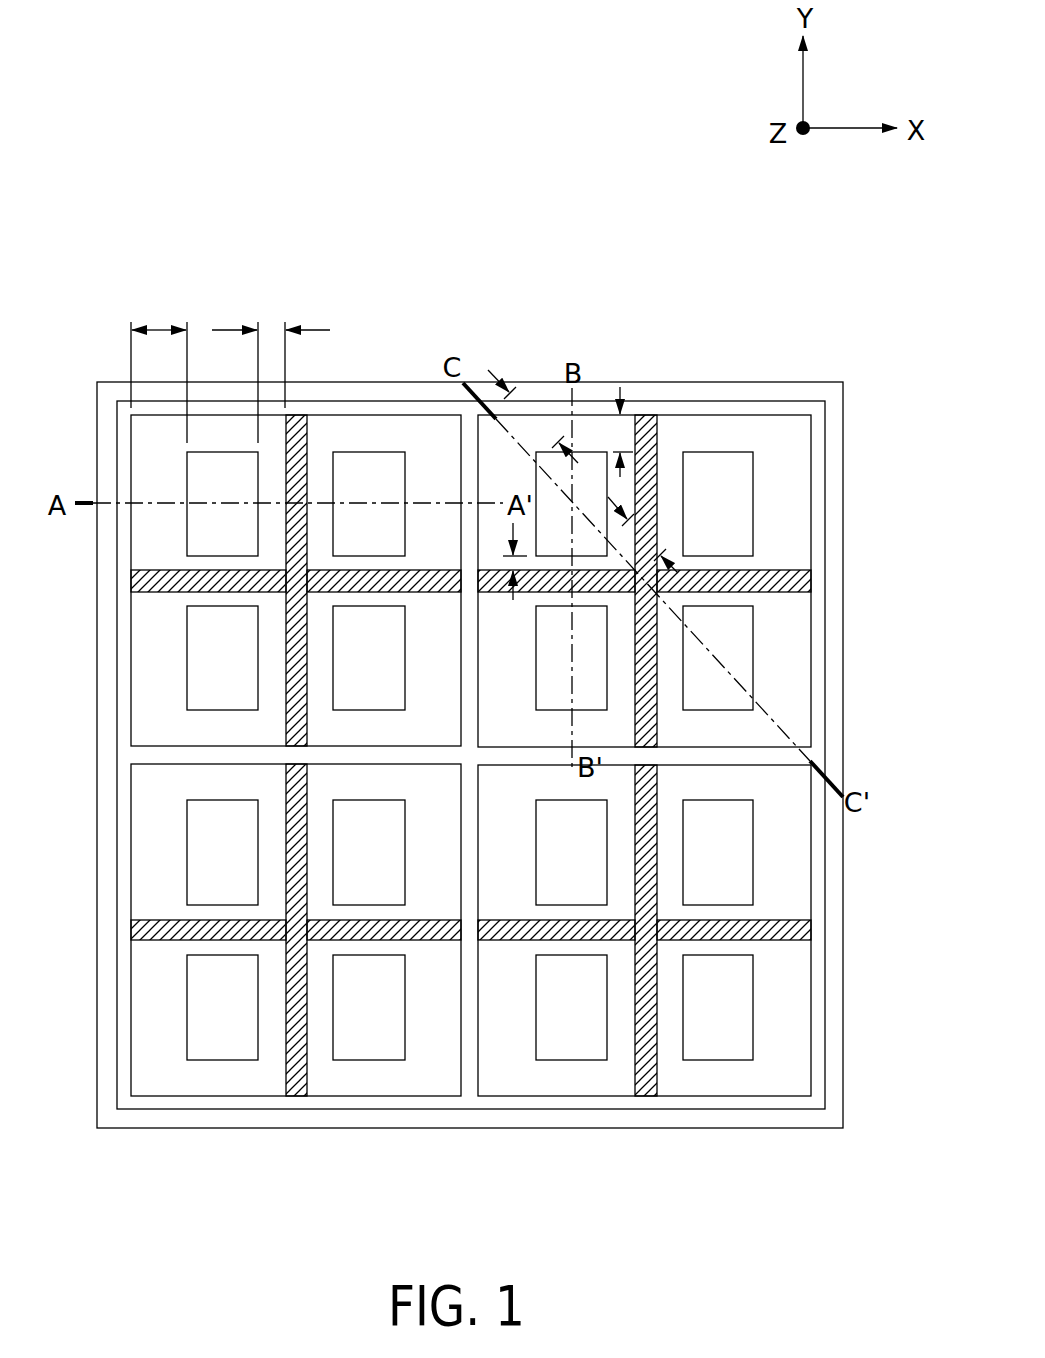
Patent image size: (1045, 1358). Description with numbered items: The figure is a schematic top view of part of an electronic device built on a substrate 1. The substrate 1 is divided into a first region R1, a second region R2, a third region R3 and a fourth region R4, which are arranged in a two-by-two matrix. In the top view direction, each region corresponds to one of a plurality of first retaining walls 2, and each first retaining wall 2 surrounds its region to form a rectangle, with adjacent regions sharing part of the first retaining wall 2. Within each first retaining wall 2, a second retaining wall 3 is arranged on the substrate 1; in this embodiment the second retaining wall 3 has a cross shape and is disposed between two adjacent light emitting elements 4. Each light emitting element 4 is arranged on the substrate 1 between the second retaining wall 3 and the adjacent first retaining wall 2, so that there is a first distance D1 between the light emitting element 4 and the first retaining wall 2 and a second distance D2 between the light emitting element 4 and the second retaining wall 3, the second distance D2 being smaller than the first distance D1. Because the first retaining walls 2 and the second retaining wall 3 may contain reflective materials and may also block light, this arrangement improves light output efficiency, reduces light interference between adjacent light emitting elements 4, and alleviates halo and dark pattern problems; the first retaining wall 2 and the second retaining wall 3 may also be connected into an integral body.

The substrate 1 is at (790, 383).
The first retaining wall 2 is at (118, 432).
The second retaining wall 3 is at (298, 442).
The light emitting element 4 is at (193, 470).
The first region R1 is at (251, 519).
The second region R2 is at (705, 385).
The third region R3 is at (107, 886).
The fourth region R4 is at (838, 918).
The first distance D1 is at (384, 387).
The second distance D2 is at (450, 449).